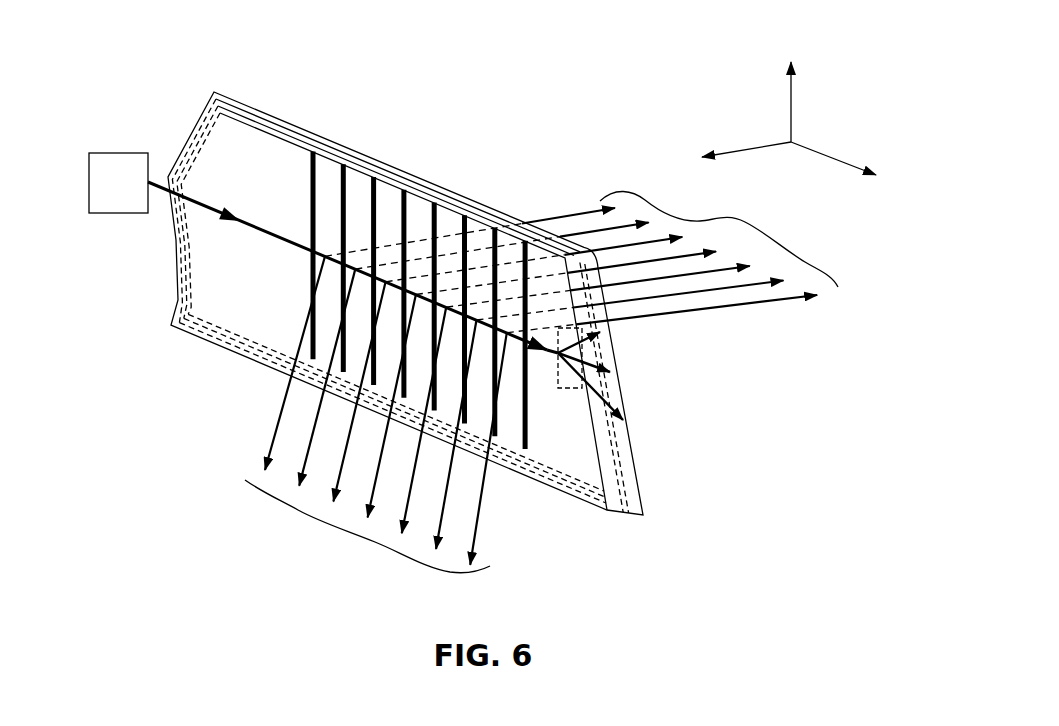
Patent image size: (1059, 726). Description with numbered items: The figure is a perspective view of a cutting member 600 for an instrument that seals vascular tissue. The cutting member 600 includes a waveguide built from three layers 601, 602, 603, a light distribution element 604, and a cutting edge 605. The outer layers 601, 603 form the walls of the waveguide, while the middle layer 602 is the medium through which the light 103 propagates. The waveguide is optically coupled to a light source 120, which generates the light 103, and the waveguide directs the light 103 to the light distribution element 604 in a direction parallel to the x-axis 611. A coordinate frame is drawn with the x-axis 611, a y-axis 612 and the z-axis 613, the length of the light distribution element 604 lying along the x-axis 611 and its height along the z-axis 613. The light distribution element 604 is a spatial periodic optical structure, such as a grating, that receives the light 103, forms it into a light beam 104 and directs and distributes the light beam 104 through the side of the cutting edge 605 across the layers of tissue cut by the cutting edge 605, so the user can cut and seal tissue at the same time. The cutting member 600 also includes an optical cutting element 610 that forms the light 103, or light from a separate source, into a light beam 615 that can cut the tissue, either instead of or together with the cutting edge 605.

The cutting member 600 is at (478, 105).
The waveguide layer 601 is at (213, 96).
The waveguide layer 602 is at (240, 114).
The waveguide layer 603 is at (433, 188).
The light distribution element 604 is at (368, 228).
The cutting edge 605 is at (624, 391).
The optical cutting element 610 is at (570, 382).
The light beam 615 is at (590, 366).
The x-axis 611 is at (824, 152).
The y axis 612 is at (749, 147).
The z-axis 613 is at (795, 98).
The light 103 is at (214, 200).
The light beam 104 is at (541, 387).
The light source 120 is at (99, 195).